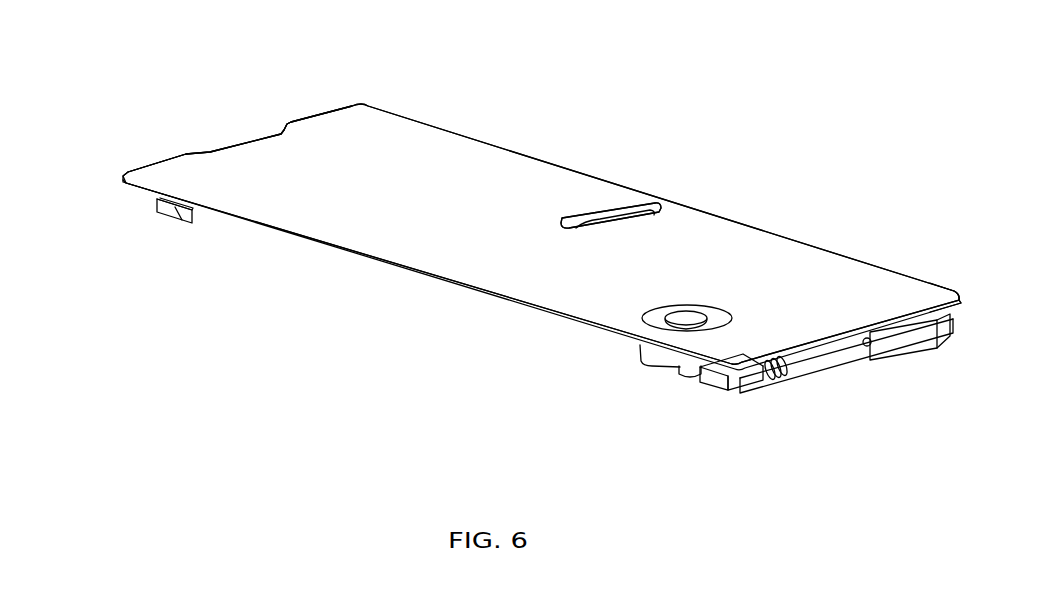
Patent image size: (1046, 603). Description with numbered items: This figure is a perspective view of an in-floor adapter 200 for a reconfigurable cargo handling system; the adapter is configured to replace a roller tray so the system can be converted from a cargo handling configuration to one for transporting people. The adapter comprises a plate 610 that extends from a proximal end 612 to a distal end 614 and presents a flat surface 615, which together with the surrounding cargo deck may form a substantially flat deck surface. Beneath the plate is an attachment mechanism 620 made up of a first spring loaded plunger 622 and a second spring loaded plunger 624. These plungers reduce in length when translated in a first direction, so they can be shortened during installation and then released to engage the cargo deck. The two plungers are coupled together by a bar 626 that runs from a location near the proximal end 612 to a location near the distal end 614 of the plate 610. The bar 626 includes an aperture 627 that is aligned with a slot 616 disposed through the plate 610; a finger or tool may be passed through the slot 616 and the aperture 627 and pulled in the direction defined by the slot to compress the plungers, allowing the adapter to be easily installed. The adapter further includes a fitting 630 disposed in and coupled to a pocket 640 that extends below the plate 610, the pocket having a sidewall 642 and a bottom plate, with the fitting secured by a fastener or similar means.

The in-floor adapter 200 is at (124, 60).
The plate 610 is at (280, 217).
The proximal end 612 is at (177, 154).
The distal end 614 is at (930, 304).
The flat surface 615 is at (392, 226).
The slot 616 is at (564, 222).
The attachment mechanism 620 is at (662, 190).
The first spring loaded plunger 622 is at (817, 352).
The second spring loaded plunger 624 is at (182, 222).
The bar 626 is at (897, 337).
The aperture 627 is at (617, 225).
The fitting 630 is at (687, 313).
The pocket 640 is at (643, 322).
The sidewall 642 is at (648, 358).